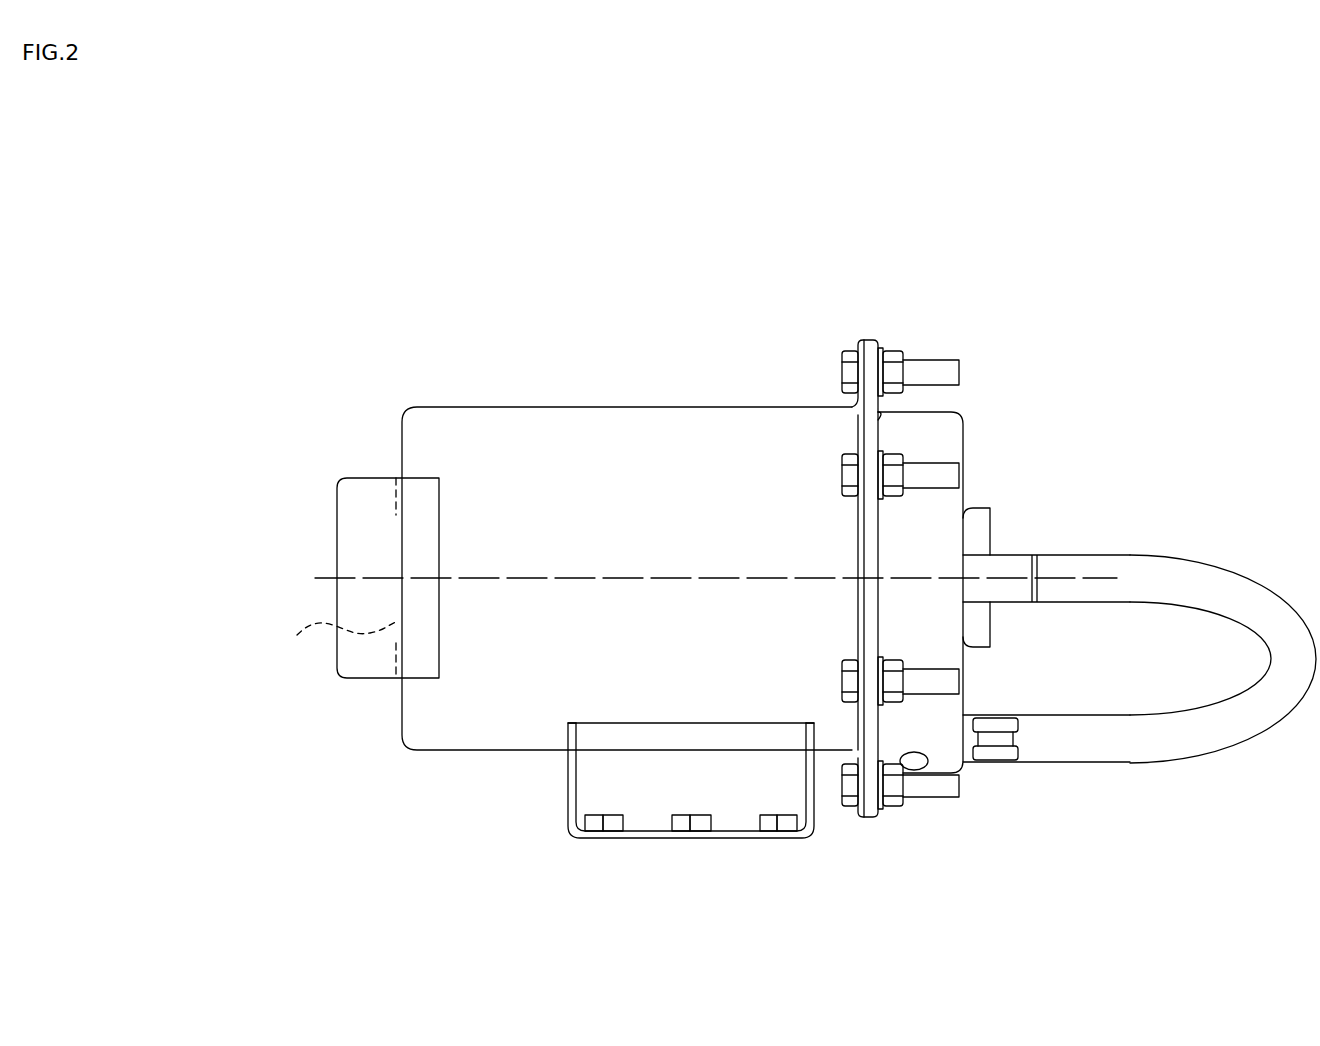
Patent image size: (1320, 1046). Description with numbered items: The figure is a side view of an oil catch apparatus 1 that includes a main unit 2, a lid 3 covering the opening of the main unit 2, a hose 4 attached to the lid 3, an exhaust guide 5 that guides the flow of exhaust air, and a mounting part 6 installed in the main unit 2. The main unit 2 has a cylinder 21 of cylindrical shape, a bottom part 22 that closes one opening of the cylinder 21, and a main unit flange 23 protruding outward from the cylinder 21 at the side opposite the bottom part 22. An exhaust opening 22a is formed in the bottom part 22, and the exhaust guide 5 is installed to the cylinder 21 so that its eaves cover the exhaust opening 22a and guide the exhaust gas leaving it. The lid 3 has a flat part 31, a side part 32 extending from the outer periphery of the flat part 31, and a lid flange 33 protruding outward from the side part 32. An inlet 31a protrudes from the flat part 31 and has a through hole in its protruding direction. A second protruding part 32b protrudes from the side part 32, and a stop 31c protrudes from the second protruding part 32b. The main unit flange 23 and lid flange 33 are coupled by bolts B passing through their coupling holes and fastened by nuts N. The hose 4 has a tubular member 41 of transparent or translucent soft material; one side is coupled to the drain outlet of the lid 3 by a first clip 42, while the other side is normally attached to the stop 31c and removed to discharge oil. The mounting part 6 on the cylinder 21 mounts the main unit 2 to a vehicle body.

The oil catch apparatus 1 is at (1042, 332).
The main unit 2 is at (742, 404).
The cylinder 21 is at (648, 450).
The bottom part 22 is at (398, 712).
The exhaust opening 22a is at (329, 641).
The main unit flange 23 is at (858, 823).
The lid 3 is at (966, 419).
The flat part 31 is at (965, 447).
The inlet 31a is at (1005, 567).
The stop 31c is at (968, 722).
The side part 32 is at (944, 628).
The second protruding part 32b is at (948, 767).
The lid flange 33 is at (877, 650).
The hose 4 is at (1147, 548).
The tubular member 41 is at (1203, 582).
The first clip 42 is at (1018, 750).
The exhaust guide 5 is at (355, 487).
The mounting part 6 is at (572, 800).
The bolt B is at (848, 356).
The nut N is at (893, 356).